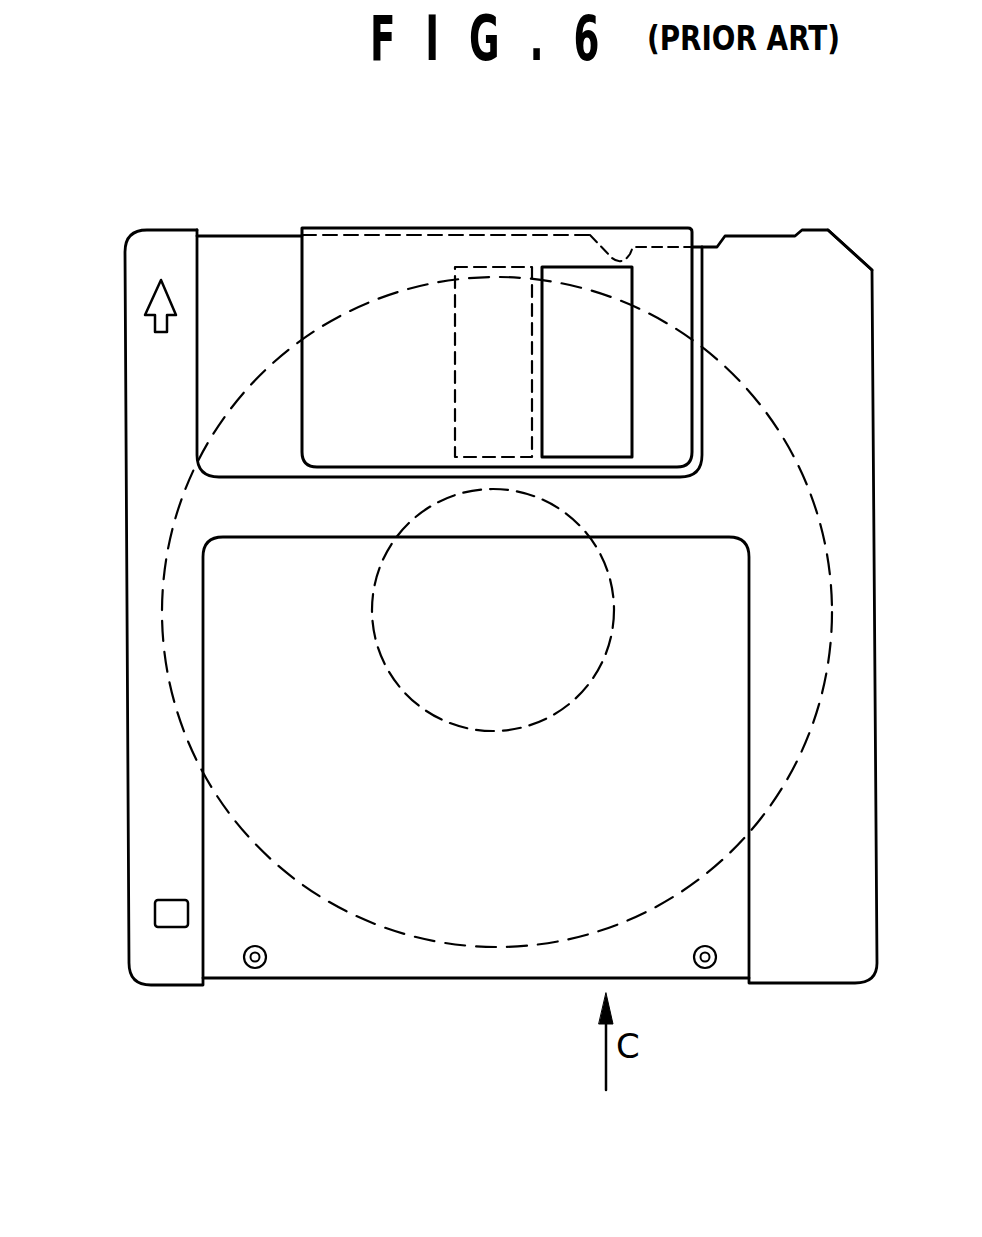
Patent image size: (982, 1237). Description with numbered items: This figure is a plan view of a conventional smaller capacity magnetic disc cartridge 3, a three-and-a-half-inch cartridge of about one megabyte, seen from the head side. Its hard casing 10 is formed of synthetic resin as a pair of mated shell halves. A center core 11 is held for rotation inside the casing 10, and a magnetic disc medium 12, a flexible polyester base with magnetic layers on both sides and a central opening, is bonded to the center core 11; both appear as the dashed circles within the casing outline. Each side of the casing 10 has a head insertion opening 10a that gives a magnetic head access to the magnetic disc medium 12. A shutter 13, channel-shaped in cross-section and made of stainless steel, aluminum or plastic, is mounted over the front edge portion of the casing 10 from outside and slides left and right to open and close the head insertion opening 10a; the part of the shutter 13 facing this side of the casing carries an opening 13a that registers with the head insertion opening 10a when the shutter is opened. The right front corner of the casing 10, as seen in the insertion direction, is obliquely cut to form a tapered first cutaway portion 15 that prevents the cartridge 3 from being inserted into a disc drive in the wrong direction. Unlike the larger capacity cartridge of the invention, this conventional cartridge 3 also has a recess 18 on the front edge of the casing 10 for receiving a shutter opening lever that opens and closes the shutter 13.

The smaller capacity magnetic disc cartridge 3 is at (148, 166).
The hard casing 10 is at (117, 452).
The head insertion opening 10a is at (470, 292).
The center core 11 is at (463, 697).
The magnetic disc medium 12 is at (168, 700).
The shutter 13 is at (383, 228).
The opening 13a is at (545, 302).
The first cutaway portion 15 is at (848, 247).
The recess 18 is at (620, 240).